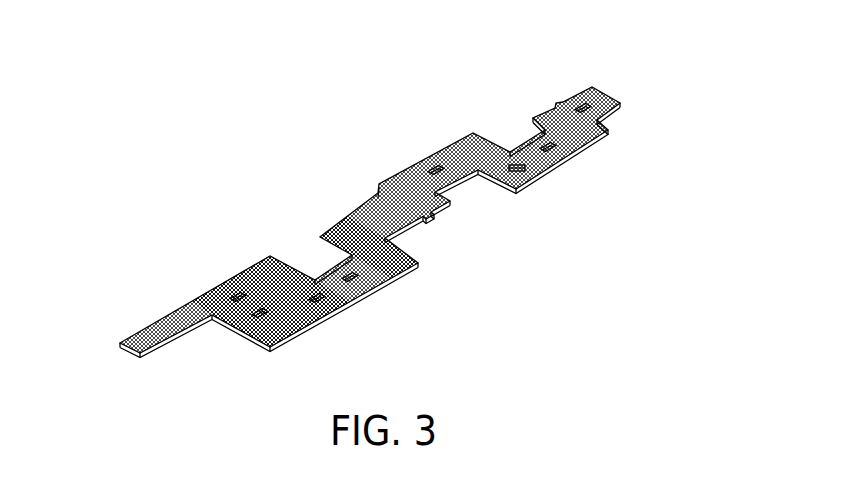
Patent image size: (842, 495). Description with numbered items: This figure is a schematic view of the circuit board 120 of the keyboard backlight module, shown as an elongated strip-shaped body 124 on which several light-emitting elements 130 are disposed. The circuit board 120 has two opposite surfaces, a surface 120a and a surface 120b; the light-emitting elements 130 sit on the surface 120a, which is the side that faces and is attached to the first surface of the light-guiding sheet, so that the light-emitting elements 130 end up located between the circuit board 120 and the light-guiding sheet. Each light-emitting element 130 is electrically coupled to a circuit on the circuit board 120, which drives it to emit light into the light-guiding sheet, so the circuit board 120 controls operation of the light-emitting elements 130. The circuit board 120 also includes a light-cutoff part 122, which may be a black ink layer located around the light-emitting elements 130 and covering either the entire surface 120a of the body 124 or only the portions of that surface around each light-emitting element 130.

The circuit board 120 is at (80, 94).
The surface 120a is at (396, 176).
The surface 120b is at (442, 230).
The light-cutoff part 122 is at (255, 272).
The body 124 is at (250, 343).
The light-emitting element 130 is at (430, 163).